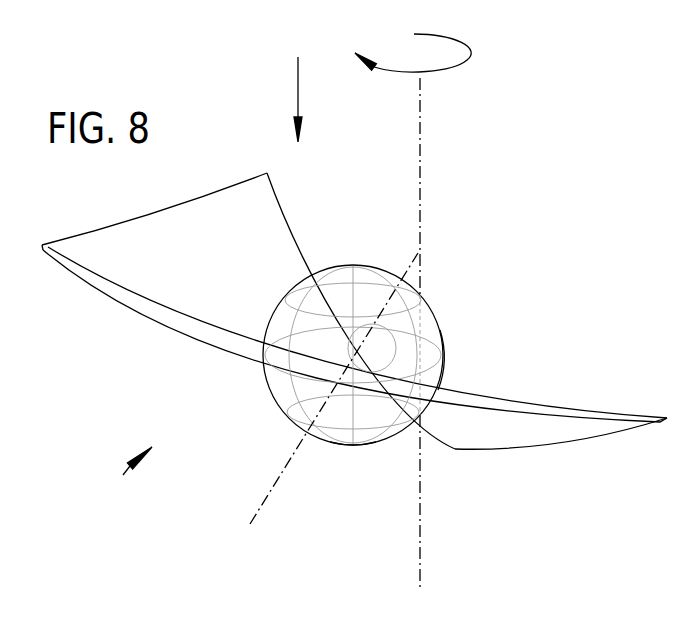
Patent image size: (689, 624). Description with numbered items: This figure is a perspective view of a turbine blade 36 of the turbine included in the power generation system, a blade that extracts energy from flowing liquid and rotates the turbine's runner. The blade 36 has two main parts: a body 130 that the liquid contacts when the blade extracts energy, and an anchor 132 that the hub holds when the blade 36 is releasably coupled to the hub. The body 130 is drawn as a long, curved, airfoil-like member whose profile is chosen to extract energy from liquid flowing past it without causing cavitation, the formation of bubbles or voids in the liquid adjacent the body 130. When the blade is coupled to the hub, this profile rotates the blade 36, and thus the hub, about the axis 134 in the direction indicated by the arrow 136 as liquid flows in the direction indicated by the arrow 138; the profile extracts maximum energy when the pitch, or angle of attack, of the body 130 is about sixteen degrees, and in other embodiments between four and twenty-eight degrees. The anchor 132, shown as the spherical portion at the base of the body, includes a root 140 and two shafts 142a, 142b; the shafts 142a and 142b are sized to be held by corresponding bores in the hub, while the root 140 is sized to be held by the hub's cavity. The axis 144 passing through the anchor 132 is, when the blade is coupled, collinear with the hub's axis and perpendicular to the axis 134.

The turbine blade 36 is at (123, 475).
The body 130 is at (150, 318).
The anchor 132 is at (348, 266).
The axis 134 is at (418, 147).
The arrow 136 is at (472, 53).
The arrow 138 is at (297, 81).
The root 140 is at (450, 316).
The shaft 142a is at (348, 445).
The shaft 142b is at (448, 373).
The axis 144 is at (264, 505).